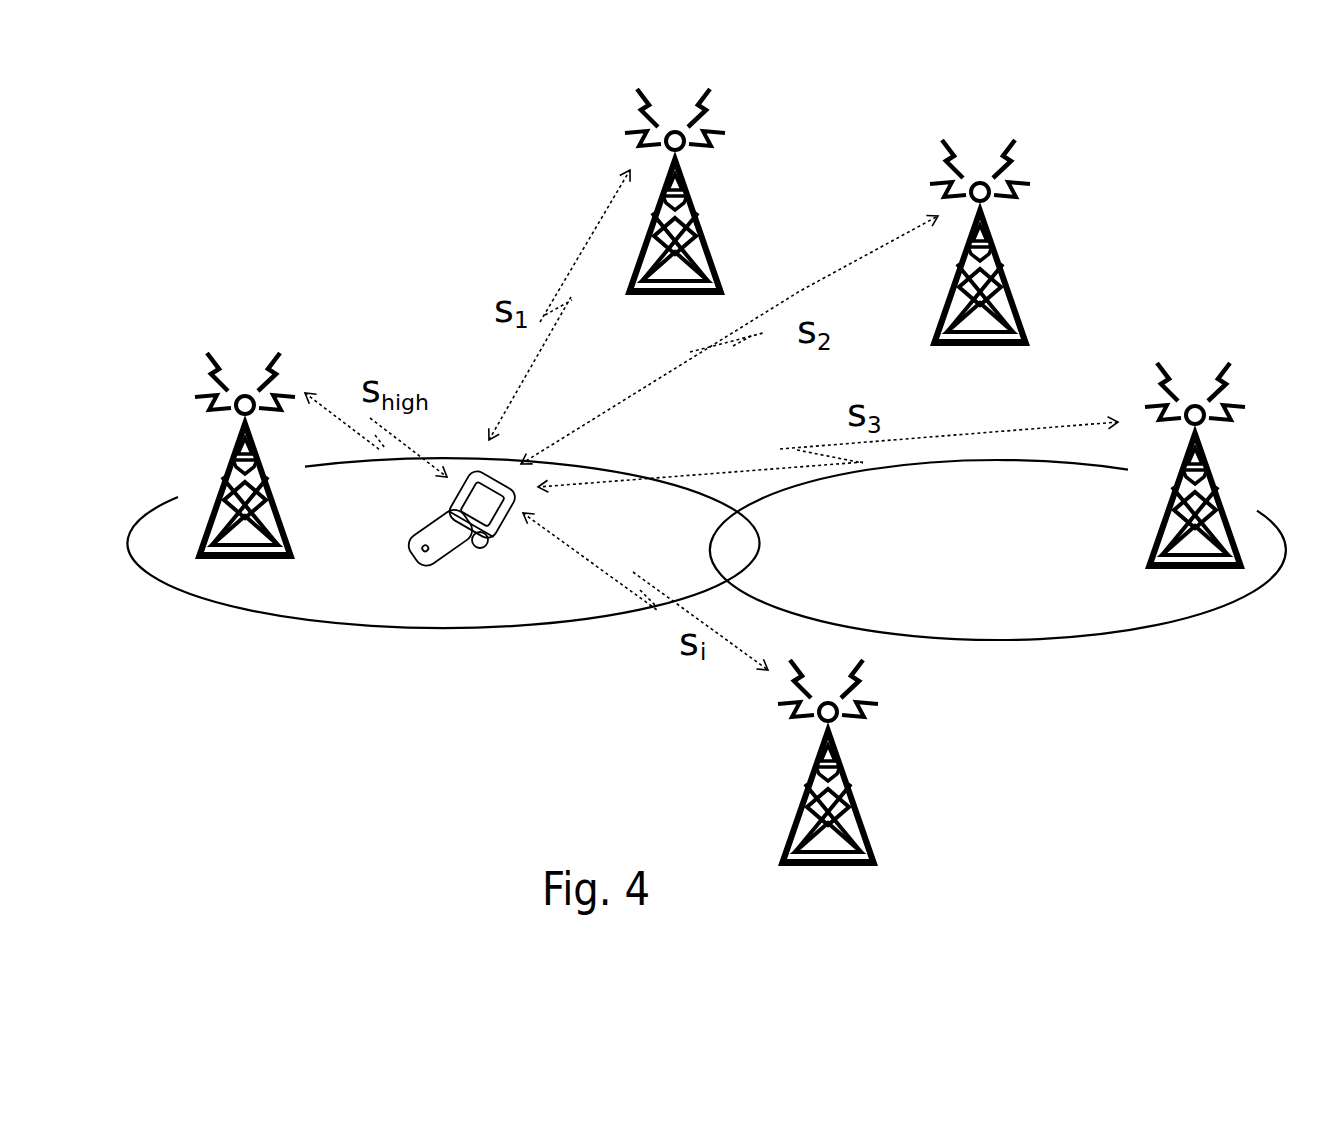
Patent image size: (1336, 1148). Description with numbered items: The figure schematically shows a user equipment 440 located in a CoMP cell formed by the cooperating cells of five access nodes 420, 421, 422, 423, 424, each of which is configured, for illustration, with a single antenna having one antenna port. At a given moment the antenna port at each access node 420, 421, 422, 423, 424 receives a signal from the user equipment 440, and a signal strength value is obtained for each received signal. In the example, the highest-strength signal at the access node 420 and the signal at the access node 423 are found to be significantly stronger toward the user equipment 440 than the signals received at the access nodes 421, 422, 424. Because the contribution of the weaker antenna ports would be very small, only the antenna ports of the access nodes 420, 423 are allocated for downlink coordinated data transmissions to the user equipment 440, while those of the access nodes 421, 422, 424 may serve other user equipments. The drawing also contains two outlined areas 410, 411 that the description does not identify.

The first cell coverage area 410 is at (340, 623).
The second cell coverage area 411 is at (1020, 638).
The access node 420 is at (220, 483).
The access node 421 is at (713, 243).
The access node 422 is at (1017, 295).
The access node 423 is at (1168, 497).
The access node 424 is at (805, 783).
The user equipment 440 is at (463, 531).